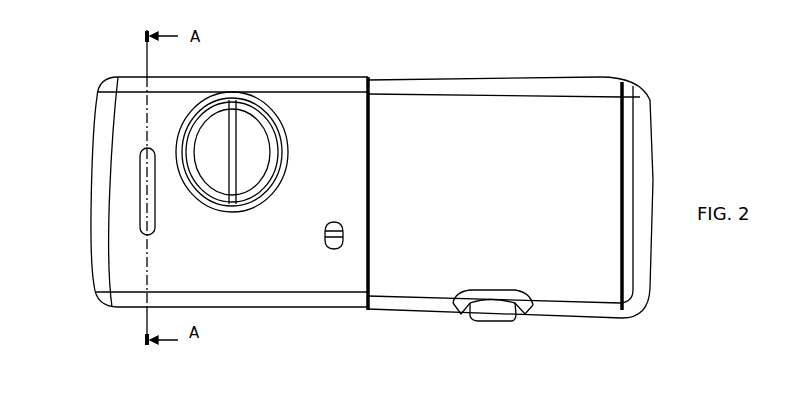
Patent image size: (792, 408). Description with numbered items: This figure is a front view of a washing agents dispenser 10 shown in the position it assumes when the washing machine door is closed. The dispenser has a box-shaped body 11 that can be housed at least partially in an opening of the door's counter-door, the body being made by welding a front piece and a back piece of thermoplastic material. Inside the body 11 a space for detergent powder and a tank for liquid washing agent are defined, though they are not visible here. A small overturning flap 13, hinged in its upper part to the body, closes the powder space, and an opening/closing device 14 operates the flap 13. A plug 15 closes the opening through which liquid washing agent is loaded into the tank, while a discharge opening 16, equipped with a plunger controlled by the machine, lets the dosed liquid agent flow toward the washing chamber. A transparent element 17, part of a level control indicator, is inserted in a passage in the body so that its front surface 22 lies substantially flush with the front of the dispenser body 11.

The washing agents dispenser 10 is at (708, 112).
The box-shaped body 11 is at (390, 82).
The overturning door or flap 13 is at (558, 108).
The opening/closing device of flap 14 is at (497, 313).
The plug 15 is at (252, 138).
The discharge opening 16 is at (335, 250).
The transparent element 17 is at (140, 157).
The front surface 22 is at (688, 407).